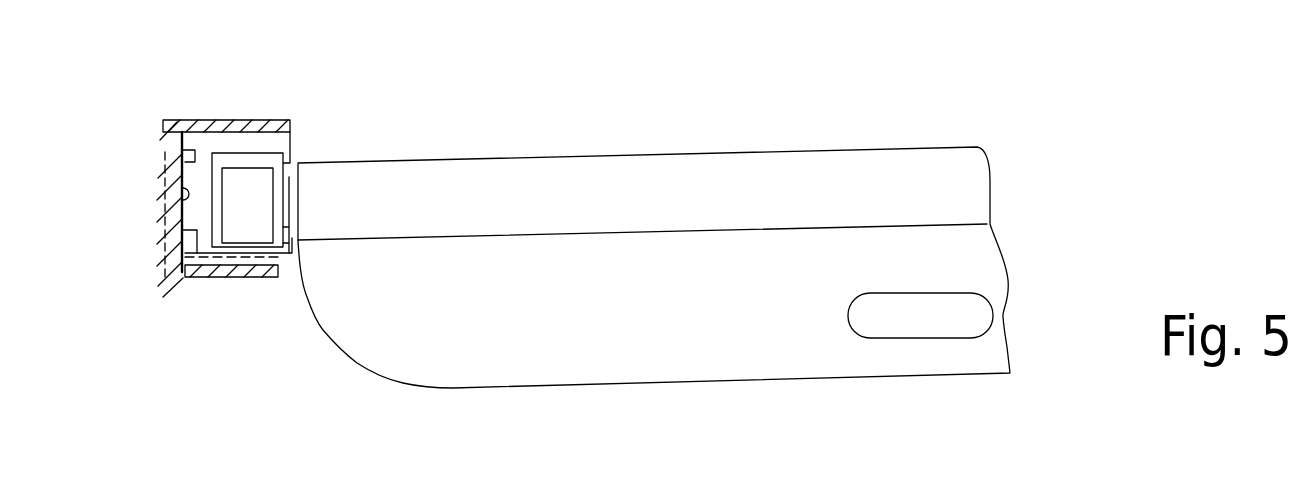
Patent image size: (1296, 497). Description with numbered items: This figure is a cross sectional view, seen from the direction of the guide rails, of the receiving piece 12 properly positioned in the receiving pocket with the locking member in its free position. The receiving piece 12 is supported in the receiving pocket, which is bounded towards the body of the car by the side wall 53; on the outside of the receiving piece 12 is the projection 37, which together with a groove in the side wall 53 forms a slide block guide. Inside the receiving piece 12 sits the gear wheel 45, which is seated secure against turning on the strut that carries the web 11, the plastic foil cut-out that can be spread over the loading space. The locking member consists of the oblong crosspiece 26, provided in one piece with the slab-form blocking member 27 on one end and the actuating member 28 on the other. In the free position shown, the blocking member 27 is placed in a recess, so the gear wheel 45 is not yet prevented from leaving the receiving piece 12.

The web 11 is at (625, 352).
The receiving piece 12 is at (280, 142).
The oblong crosspiece 26 is at (242, 252).
The blocking member 27 is at (288, 235).
The actuating member 28 is at (180, 247).
The projection 37 is at (190, 158).
The gear wheel 45 is at (254, 200).
The side wall 53 is at (180, 213).